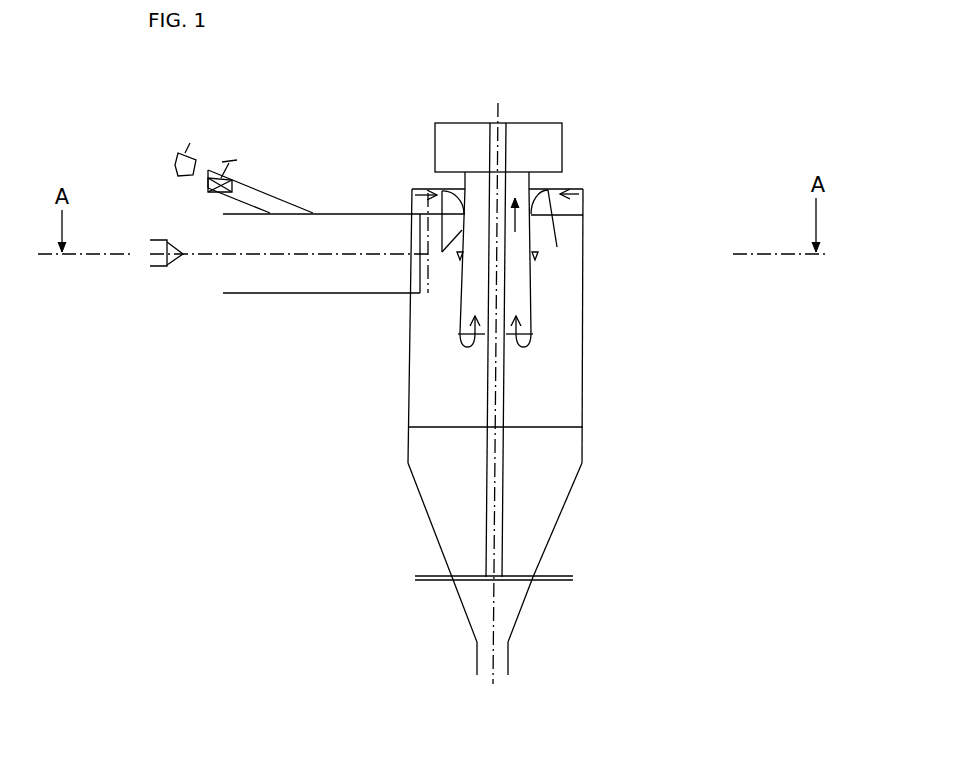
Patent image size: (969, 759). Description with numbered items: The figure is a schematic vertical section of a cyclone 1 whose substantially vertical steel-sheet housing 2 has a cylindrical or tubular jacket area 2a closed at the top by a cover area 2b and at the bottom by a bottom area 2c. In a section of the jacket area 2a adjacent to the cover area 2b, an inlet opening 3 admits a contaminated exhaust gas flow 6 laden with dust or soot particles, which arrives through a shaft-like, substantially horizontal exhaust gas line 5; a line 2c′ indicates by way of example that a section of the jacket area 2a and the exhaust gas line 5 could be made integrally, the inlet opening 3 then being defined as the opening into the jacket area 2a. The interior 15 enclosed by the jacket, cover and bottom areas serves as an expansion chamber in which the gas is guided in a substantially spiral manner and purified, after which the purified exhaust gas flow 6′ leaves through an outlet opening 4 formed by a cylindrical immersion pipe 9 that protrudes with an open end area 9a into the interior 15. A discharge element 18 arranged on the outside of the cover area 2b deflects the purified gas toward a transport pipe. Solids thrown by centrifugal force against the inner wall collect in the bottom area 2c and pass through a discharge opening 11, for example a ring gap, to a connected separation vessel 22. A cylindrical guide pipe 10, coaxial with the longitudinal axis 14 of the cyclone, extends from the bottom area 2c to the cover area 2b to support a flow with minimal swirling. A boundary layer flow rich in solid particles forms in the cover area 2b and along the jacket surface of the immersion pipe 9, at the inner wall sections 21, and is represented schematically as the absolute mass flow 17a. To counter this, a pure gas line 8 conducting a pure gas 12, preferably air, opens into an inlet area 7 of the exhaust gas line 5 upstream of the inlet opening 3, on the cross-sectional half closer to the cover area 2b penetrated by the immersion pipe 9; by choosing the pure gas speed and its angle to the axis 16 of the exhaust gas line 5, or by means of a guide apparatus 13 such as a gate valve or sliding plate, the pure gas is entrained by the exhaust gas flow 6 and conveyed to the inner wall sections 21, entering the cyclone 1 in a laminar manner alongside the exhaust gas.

The cyclone 1 is at (698, 220).
The housing 2 is at (558, 387).
The jacket area 2a is at (587, 285).
The cover area 2b is at (571, 188).
The bottom area 2c is at (470, 586).
The line 2c′ is at (584, 215).
The inlet opening 3 is at (425, 232).
The outlet opening 4 is at (480, 338).
The exhaust gas line 5 is at (297, 294).
The exhaust gas flow 6 is at (156, 240).
The exhaust gas flow 6′ is at (518, 231).
The inlet area 7 is at (305, 202).
The pure gas line 8 is at (253, 190).
The immersion pipe 9 is at (473, 292).
The open end area 9a is at (515, 353).
The guide pipe 10 is at (499, 465).
The discharge opening 11 is at (527, 586).
The pure gas 12 is at (186, 144).
The guide apparatus 13 is at (213, 194).
The longitudinal axis 14 is at (490, 682).
The interior 15 is at (555, 411).
The axis of the exhaust gas line 16 is at (340, 256).
The absolute mass flow 17a is at (533, 337).
The discharge element 18 is at (465, 128).
The inner wall section 21 is at (558, 245).
The separation vessel 22 is at (247, 207).